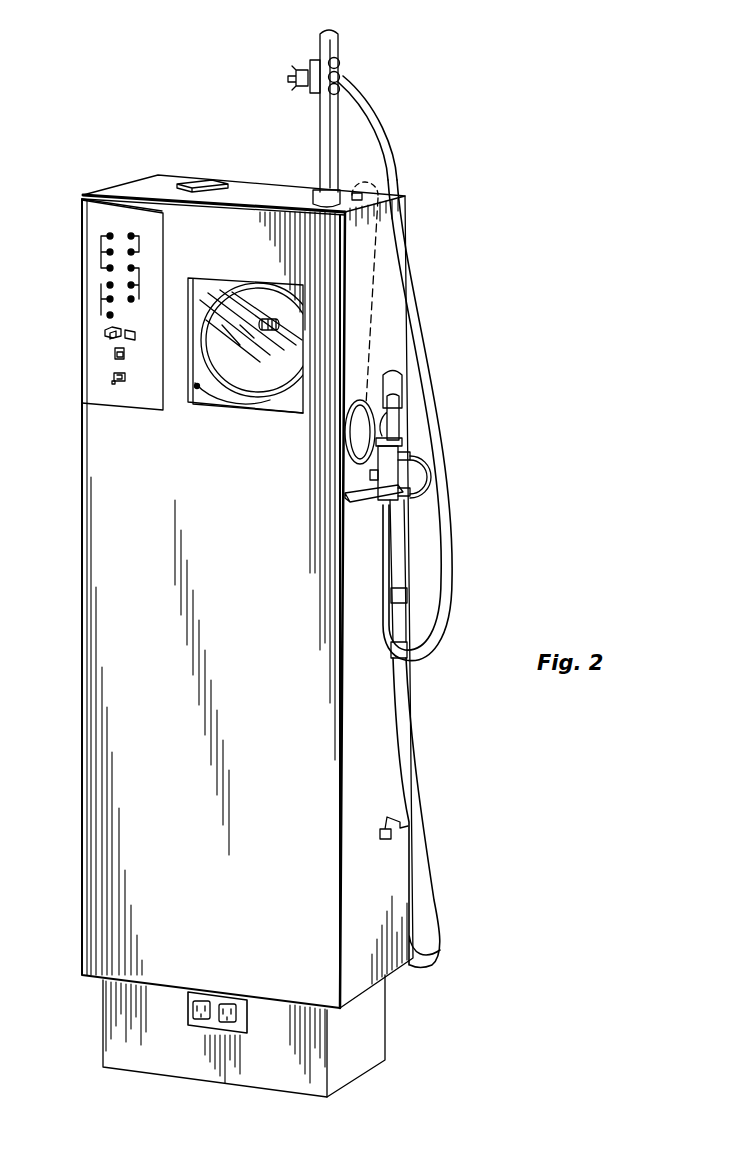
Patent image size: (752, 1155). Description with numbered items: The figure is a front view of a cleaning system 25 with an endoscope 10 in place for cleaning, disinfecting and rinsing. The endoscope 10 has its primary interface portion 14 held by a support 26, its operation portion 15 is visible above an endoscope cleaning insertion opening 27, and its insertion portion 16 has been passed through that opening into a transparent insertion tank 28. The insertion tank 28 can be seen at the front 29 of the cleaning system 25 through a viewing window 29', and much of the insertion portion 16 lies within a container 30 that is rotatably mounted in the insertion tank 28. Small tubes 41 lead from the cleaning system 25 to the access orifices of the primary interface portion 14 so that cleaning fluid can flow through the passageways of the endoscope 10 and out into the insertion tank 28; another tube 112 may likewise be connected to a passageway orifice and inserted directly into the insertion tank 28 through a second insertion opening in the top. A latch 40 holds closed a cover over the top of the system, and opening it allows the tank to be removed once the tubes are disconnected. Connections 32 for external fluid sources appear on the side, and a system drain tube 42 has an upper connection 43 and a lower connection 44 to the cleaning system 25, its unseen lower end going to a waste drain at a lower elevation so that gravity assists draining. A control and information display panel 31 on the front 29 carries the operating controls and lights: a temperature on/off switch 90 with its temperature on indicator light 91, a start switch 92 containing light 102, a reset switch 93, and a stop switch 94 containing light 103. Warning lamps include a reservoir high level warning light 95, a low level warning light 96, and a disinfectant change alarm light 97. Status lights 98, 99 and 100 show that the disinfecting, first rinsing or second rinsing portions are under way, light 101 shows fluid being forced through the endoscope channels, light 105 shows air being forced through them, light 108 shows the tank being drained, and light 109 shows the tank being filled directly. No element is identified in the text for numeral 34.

The endoscope 10 is at (355, 575).
The primary interface portion 14 is at (410, 470).
The operation portion 15 is at (320, 33).
The insertion portion 16 is at (300, 355).
The cleaning system 25 is at (64, 633).
The support 26 is at (364, 502).
The endoscope cleaning insertion opening 27 is at (380, 187).
The insertion tank 28 is at (214, 402).
The front 29 is at (96, 497).
The viewing window 29' is at (211, 408).
The container 30 is at (206, 292).
The control and information display panel 31 is at (84, 370).
The connections 32 is at (386, 826).
The reel axle 34 is at (270, 319).
The latch 40 is at (219, 180).
The small tubes 41 is at (358, 455).
The system drain tube 42 is at (432, 851).
The upper connection 43 is at (398, 372).
The lower connection 44 is at (390, 650).
The temperature on/off switch 90 is at (127, 360).
The temperature on indicator light 91 is at (116, 333).
The start switch 92 is at (110, 335).
The reset switch 93 is at (135, 337).
The stop switch 94 is at (129, 380).
The reservoir high level warning light 95 is at (108, 285).
The low level warning light 96 is at (108, 299).
The disinfectant supply time for change alarm light 97 is at (108, 315).
The disinfecting indicator light 98 is at (108, 236).
The first rinsing indicator light 99 is at (108, 252).
The second rinsing indicator light 100 is at (108, 268).
The channel flow indicator light 101 is at (132, 236).
The start switch light 102 is at (110, 343).
The stop switch light 103 is at (110, 385).
The air flow indicator light 105 is at (132, 252).
The drain indicator light 108 is at (132, 300).
The tank fill indicator light 109 is at (132, 268).
The tube 112 is at (372, 282).